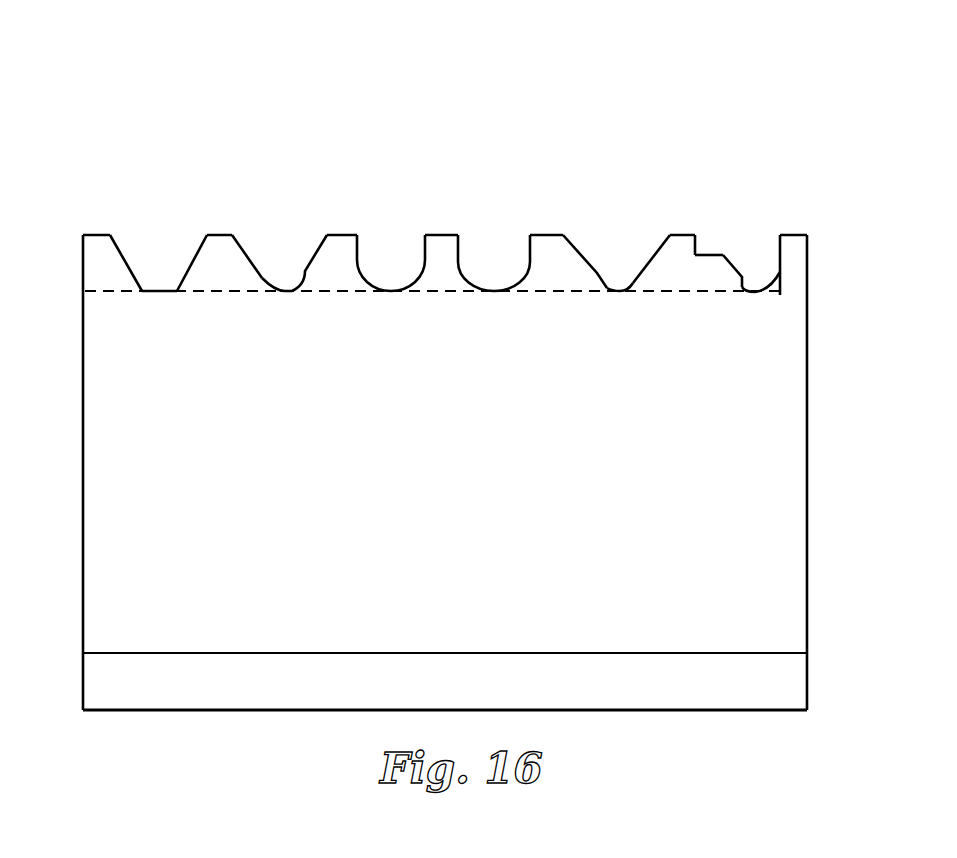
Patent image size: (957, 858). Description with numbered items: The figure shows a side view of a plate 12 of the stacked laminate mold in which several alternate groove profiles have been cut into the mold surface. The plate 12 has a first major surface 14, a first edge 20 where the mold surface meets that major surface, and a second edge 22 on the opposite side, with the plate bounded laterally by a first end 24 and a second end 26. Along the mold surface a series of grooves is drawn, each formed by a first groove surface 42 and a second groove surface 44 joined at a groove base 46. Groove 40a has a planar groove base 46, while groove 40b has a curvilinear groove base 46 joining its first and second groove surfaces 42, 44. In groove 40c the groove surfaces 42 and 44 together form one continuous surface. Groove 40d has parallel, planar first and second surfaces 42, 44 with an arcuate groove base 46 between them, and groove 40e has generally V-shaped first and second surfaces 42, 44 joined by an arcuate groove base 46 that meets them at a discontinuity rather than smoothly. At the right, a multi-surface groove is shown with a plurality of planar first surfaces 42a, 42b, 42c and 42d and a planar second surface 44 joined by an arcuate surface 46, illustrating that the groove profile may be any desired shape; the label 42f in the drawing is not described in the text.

The plate 12 is at (685, 83).
The first major surface 14 is at (95, 485).
The first edge 20 is at (90, 235).
The second edge 22 is at (107, 293).
The first end 24 is at (808, 403).
The second end 26 is at (82, 397).
The groove 40a is at (183, 290).
The groove 40b is at (303, 290).
The groove 40c is at (418, 292).
The groove 40d is at (525, 292).
The groove 40e is at (638, 292).
The first groove surface 42 is at (117, 248).
The second groove surface 44 is at (195, 255).
The groove base 46 is at (155, 290).
The planar first surface 42a is at (700, 238).
The planar first surface 42b is at (710, 253).
The planar first surface 42c is at (730, 260).
The planar first surface 42d is at (750, 283).
The end wall 42f is at (787, 257).